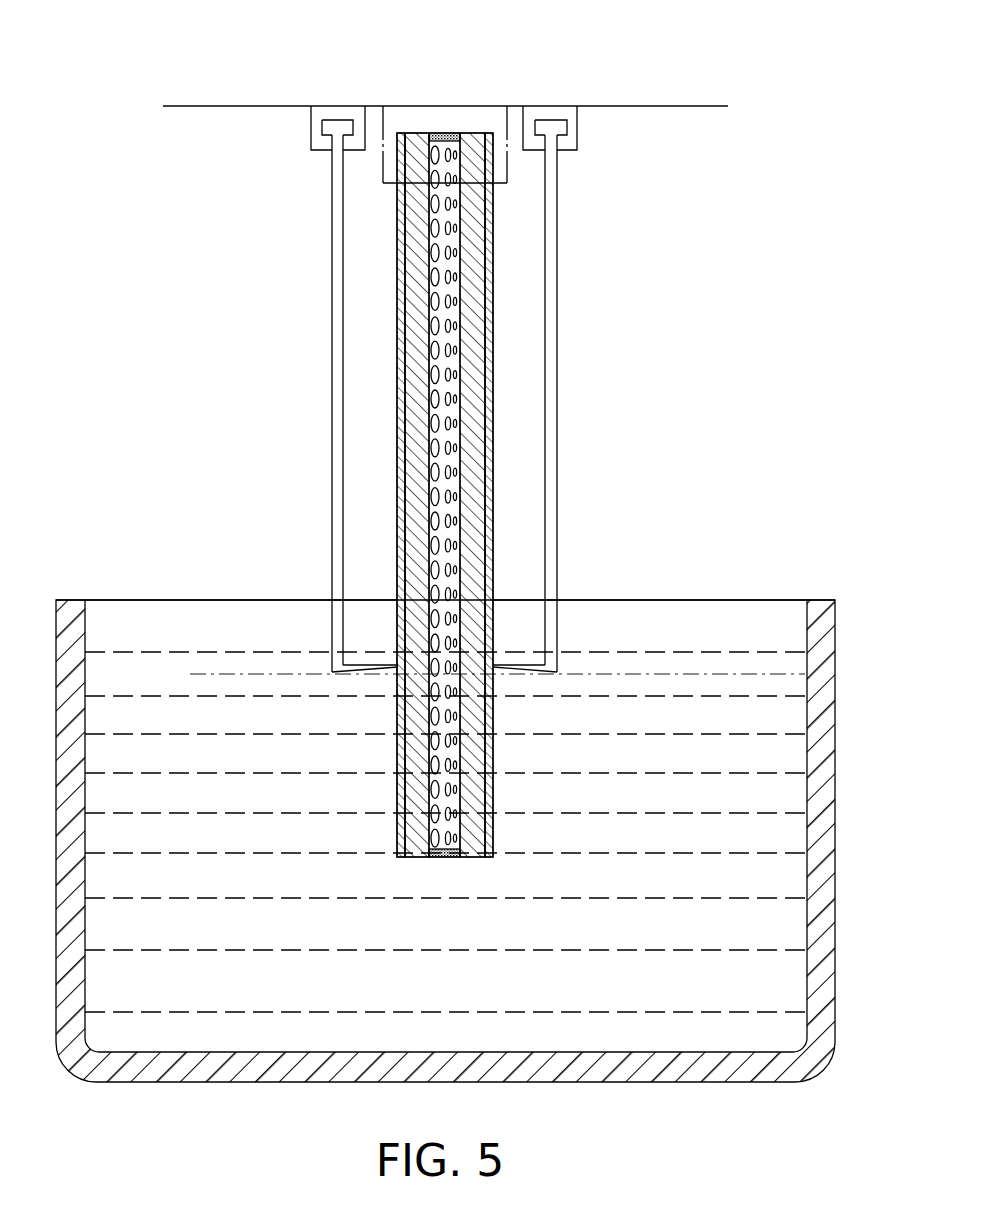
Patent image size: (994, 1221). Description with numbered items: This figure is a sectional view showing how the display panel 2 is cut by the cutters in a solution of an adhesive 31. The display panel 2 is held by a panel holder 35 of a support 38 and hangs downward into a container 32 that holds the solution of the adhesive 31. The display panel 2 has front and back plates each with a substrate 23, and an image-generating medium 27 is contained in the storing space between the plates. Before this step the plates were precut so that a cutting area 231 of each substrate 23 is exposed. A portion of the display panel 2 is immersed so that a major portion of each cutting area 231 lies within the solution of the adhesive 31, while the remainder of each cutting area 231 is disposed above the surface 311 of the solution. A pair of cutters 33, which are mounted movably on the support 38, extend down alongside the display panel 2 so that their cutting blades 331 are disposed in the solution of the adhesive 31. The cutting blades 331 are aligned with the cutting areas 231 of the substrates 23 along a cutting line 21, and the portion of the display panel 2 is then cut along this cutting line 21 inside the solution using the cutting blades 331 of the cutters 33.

The display panel 2 is at (517, 228).
The cutting line 21 is at (257, 654).
The substrate 23 is at (425, 421).
The cutting area 231 is at (398, 653).
The image-generating medium 27 is at (432, 838).
The solution of an adhesive 31 is at (232, 950).
The surface of the solution of the adhesive 311 is at (183, 653).
The container 32 is at (317, 1068).
The cutter 33 is at (320, 372).
The cutting blade 331 is at (378, 668).
The panel holder 35 is at (383, 128).
The support 38 is at (548, 115).